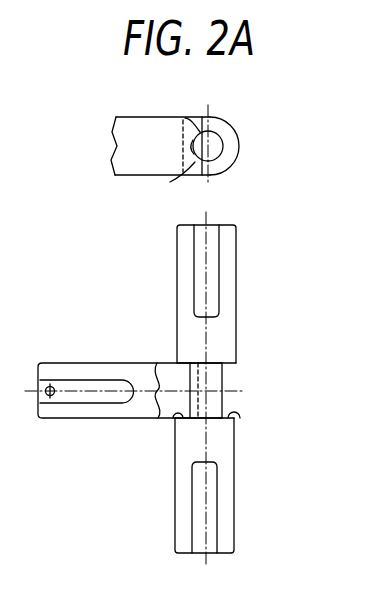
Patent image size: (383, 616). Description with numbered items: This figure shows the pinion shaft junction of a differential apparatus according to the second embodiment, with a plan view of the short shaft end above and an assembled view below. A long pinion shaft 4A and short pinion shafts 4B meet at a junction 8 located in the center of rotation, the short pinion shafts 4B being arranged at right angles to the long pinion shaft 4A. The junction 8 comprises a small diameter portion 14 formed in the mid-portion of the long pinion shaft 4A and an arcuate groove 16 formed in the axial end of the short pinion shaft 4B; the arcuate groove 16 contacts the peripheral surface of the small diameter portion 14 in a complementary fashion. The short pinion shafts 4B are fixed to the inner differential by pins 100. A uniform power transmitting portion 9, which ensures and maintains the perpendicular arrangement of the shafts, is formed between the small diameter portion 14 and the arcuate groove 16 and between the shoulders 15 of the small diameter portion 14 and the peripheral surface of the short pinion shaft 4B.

The long pinion shaft 4A is at (230, 127).
The short pinion shaft 4B is at (135, 174).
The small diameter portion 14 is at (223, 140).
The arcuate groove 16 is at (199, 130).
The uniform power transmitting portion 9 is at (184, 169).
The junction 8 is at (238, 398).
The shoulder 15 is at (236, 413).
The pin 100 is at (51, 397).